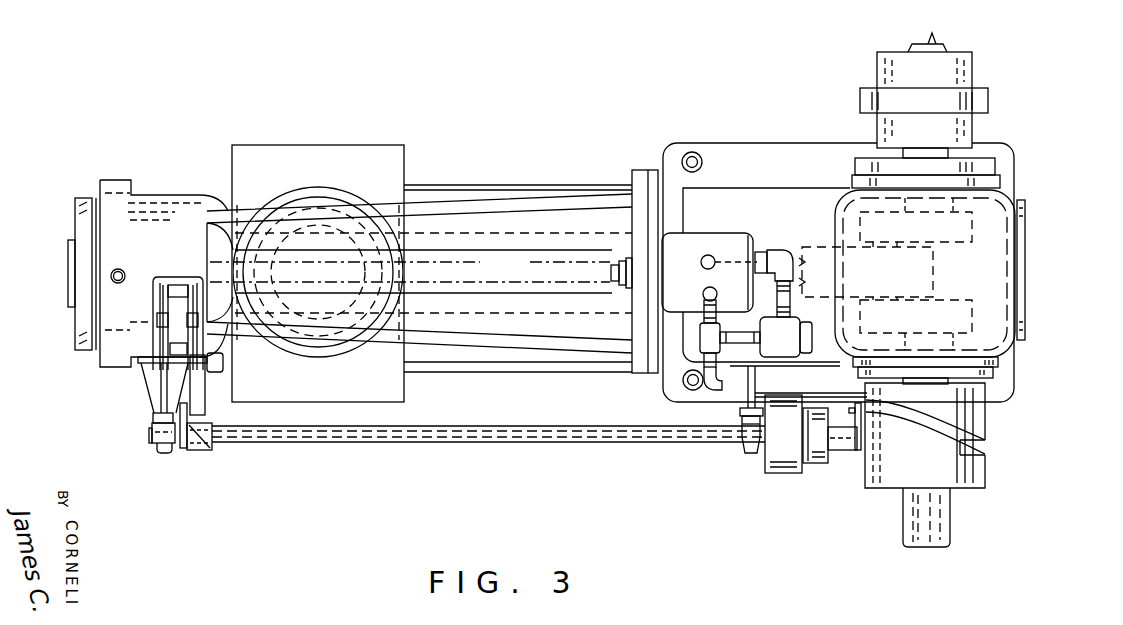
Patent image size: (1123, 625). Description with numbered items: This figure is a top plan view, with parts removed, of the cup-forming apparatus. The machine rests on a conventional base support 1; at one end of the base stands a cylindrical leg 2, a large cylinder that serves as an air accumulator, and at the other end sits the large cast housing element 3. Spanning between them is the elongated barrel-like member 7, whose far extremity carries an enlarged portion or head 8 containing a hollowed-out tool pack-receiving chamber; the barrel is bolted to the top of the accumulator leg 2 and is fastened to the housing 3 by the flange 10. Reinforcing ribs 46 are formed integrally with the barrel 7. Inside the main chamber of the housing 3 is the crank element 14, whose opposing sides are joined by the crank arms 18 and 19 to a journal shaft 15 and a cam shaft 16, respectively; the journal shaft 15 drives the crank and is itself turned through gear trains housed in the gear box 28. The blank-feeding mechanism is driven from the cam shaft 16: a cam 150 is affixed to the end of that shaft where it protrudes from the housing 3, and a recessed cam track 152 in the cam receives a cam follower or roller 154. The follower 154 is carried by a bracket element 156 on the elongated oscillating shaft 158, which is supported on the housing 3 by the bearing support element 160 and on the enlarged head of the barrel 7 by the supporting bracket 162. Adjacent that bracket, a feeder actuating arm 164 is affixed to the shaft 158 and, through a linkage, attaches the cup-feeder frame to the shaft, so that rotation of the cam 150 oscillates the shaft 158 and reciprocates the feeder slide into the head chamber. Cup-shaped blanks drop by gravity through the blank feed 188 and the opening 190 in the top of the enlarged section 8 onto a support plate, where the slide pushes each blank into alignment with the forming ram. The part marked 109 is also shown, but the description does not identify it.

The base support 1 is at (356, 143).
The cylindrical leg 2 is at (353, 349).
The cast housing element 3 is at (935, 270).
The barrel-like member 7 is at (524, 220).
The enlarged portion or head 8 is at (172, 205).
The flange 10 is at (640, 376).
The crank element 14 is at (982, 231).
The journal shaft 15 is at (1000, 197).
The cam shaft 16 is at (947, 522).
The crank arm 18 is at (1022, 200).
The crank arm 19 is at (968, 318).
The gear box 28 is at (932, 78).
The reinforcing ribs 46 is at (516, 278).
The support bracket 109 is at (209, 394).
The cam 150 is at (963, 435).
The recessed cam track 152 is at (987, 453).
The cam follower or roller 154 is at (878, 410).
The bracket element 156 is at (850, 450).
The elongated oscillating shaft 158 is at (688, 441).
The bearing support element 160 is at (750, 460).
The supporting bracket 162 is at (163, 452).
The feeder actuating arm 164 is at (193, 447).
The blank feed 188 is at (158, 325).
The opening 190 is at (156, 305).